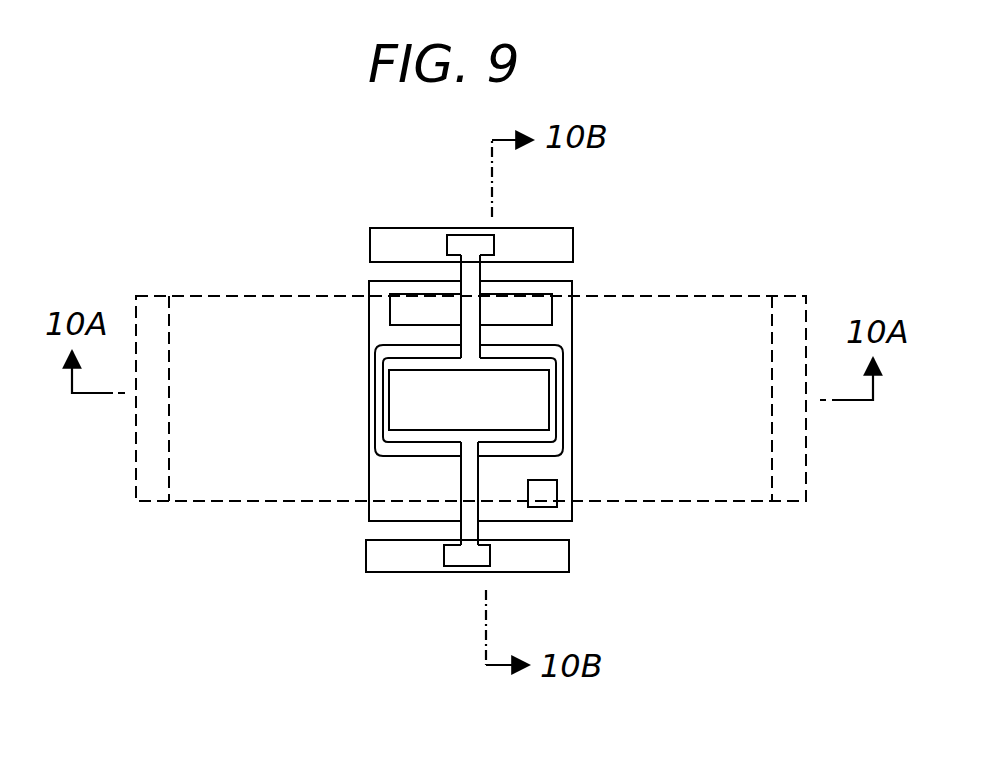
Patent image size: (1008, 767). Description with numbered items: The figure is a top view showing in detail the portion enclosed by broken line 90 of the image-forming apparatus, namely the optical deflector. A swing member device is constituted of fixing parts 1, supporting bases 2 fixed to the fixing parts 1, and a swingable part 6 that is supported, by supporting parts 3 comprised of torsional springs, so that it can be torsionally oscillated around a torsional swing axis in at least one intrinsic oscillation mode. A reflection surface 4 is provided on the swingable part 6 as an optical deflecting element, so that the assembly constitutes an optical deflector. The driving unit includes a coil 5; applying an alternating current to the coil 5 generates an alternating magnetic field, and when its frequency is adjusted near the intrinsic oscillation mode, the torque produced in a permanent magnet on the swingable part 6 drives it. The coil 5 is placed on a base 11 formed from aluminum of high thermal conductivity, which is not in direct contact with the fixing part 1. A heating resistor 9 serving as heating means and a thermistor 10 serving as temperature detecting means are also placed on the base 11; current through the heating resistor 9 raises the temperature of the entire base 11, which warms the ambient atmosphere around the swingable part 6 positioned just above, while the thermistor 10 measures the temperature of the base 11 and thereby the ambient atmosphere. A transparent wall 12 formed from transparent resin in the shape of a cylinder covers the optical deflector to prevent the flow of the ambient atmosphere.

The broken line 90 is at (303, 190).
The fixing part 1 is at (573, 240).
The supporting base 2 is at (460, 242).
The supporting part 3 is at (468, 275).
The reflection surface 4 is at (435, 413).
The coil 5 is at (420, 343).
The swingable part 6 is at (520, 363).
The heating resistor 9 is at (528, 310).
The thermistor 10 is at (548, 505).
The base 11 is at (572, 452).
The transparent wall 12 is at (706, 503).